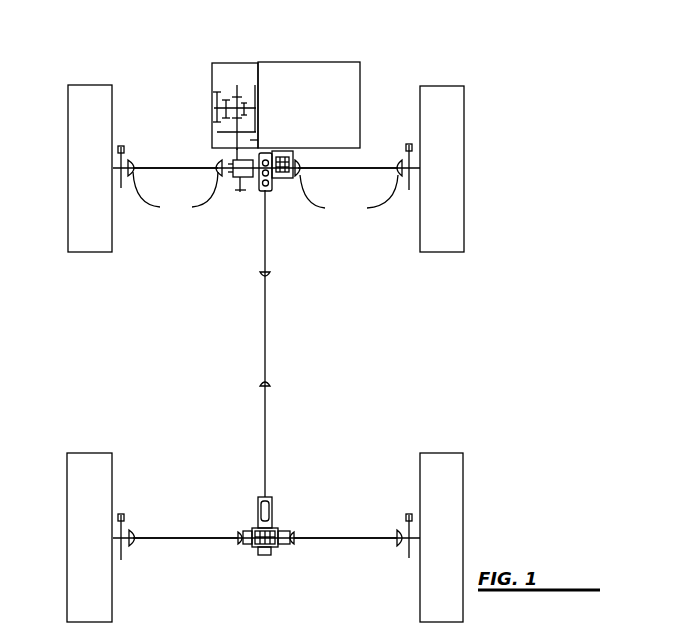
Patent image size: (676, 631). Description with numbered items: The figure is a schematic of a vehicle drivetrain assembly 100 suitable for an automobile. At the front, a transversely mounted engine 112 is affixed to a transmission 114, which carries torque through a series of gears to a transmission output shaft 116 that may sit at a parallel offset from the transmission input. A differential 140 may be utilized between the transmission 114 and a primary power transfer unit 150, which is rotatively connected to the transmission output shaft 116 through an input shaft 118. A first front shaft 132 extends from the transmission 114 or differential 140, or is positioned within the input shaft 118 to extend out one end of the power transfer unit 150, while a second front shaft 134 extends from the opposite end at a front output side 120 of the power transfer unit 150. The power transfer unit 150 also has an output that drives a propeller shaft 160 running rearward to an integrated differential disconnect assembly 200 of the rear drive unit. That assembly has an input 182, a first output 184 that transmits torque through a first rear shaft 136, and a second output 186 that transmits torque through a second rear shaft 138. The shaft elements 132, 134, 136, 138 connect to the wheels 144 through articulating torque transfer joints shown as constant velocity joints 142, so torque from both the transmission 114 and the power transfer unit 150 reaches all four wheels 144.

The vehicle drivetrain assembly 100 is at (464, 45).
The engine 112 is at (343, 74).
The transmission 114 is at (222, 62).
The transmission output shaft 116 is at (237, 153).
The input shaft 118 is at (266, 151).
The front output side 120 is at (306, 158).
The first front shaft 132 is at (183, 167).
The second front shaft 134 is at (378, 169).
The first rear shaft 136 is at (193, 537).
The second rear shaft 138 is at (368, 537).
The differential 140 is at (232, 190).
The constant velocity joints 142 is at (265, 201).
The wheels 144 is at (83, 182).
The power transfer unit 150 is at (284, 198).
The propeller shaft 160 is at (267, 338).
The input 182 is at (268, 498).
The first output 184 is at (245, 541).
The second output 186 is at (285, 544).
The integrated differential disconnect assembly 200 is at (250, 512).